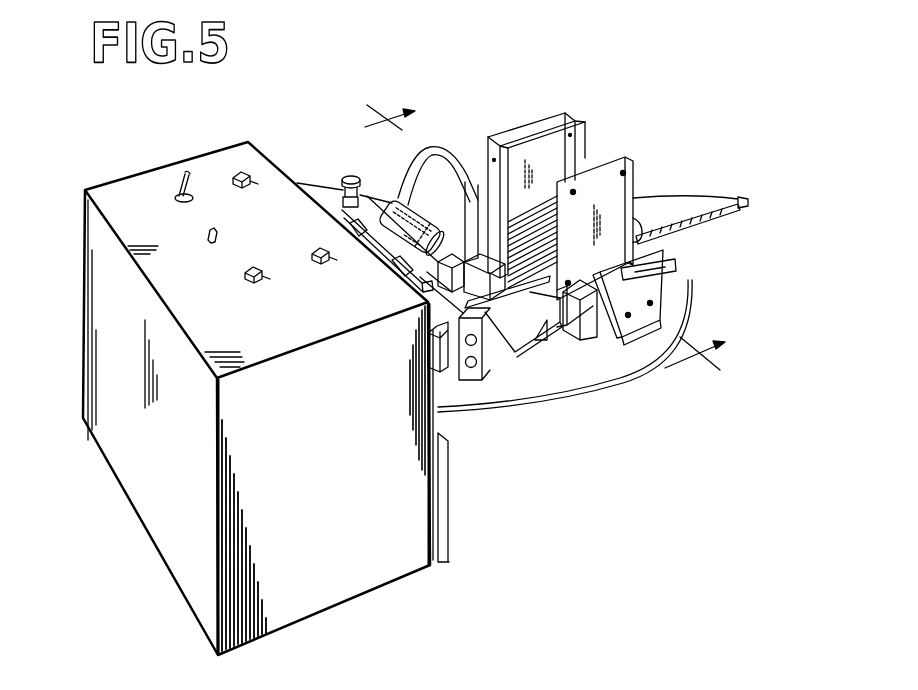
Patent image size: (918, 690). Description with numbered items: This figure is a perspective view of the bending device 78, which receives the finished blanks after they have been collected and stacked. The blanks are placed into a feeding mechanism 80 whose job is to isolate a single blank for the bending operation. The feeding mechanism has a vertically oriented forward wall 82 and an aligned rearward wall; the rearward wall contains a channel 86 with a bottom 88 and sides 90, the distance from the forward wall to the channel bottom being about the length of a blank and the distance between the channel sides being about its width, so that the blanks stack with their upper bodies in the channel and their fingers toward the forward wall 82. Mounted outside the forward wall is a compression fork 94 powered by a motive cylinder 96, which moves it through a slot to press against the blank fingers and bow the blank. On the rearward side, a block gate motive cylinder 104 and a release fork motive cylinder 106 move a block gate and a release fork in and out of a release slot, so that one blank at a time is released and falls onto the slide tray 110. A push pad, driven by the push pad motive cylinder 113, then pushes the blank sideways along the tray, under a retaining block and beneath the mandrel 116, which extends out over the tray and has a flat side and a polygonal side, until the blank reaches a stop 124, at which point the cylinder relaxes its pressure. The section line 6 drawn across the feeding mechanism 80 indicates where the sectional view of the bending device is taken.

The bending device 78 is at (72, 163).
The feeding mechanism 80 is at (573, 120).
The forward wall 82 is at (638, 175).
The channel 86 is at (565, 89).
The bottom 88 is at (557, 132).
The sides 90 is at (510, 166).
The compression fork 94 is at (595, 287).
The motive cylinder 96 is at (670, 258).
The block gate motive cylinder 104 is at (418, 166).
The release fork motive cylinder 106 is at (470, 160).
The slide tray 110 is at (497, 361).
The push pad motive cylinder 113 is at (730, 220).
The mandrel 116 is at (500, 340).
The stop 124 is at (487, 372).
The section line 6 is at (551, 229).